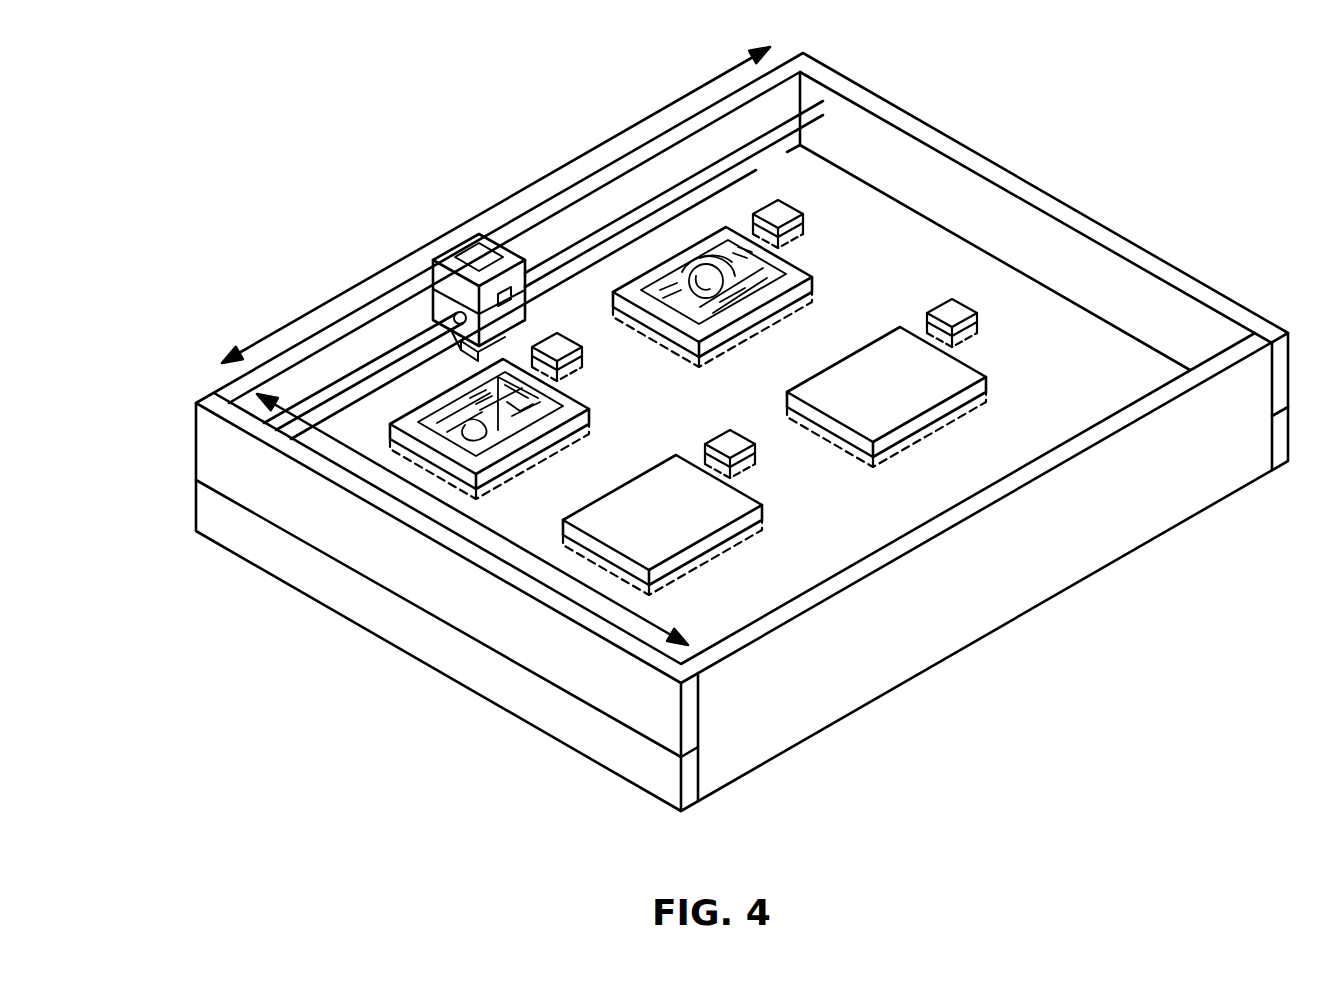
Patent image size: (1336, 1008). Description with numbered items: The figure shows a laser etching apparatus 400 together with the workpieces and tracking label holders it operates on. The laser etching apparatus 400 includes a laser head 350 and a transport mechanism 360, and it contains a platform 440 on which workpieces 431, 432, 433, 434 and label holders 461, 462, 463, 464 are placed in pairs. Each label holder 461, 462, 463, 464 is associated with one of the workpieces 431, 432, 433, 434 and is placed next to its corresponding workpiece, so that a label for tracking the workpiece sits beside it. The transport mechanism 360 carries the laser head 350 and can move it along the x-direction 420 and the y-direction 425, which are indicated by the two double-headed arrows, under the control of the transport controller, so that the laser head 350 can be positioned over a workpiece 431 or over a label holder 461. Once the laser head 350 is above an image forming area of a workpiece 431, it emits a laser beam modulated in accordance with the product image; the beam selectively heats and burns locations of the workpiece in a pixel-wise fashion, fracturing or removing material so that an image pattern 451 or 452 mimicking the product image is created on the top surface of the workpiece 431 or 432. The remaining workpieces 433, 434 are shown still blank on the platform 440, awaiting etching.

The laser etching apparatus 400 is at (945, 147).
The x-direction 420 is at (630, 127).
The y-direction 425 is at (323, 434).
The laser head 350 is at (473, 250).
The transport mechanism 360 is at (812, 108).
The platform 440 is at (1012, 322).
The workpiece 431 is at (561, 402).
The workpiece 432 is at (788, 280).
The workpiece 433 is at (723, 500).
The workpiece 434 is at (950, 380).
The image pattern 451 is at (543, 398).
The image pattern 452 is at (745, 282).
The label holder 461 is at (560, 340).
The label holder 462 is at (778, 210).
The label holder 463 is at (735, 437).
The label holder 464 is at (950, 310).